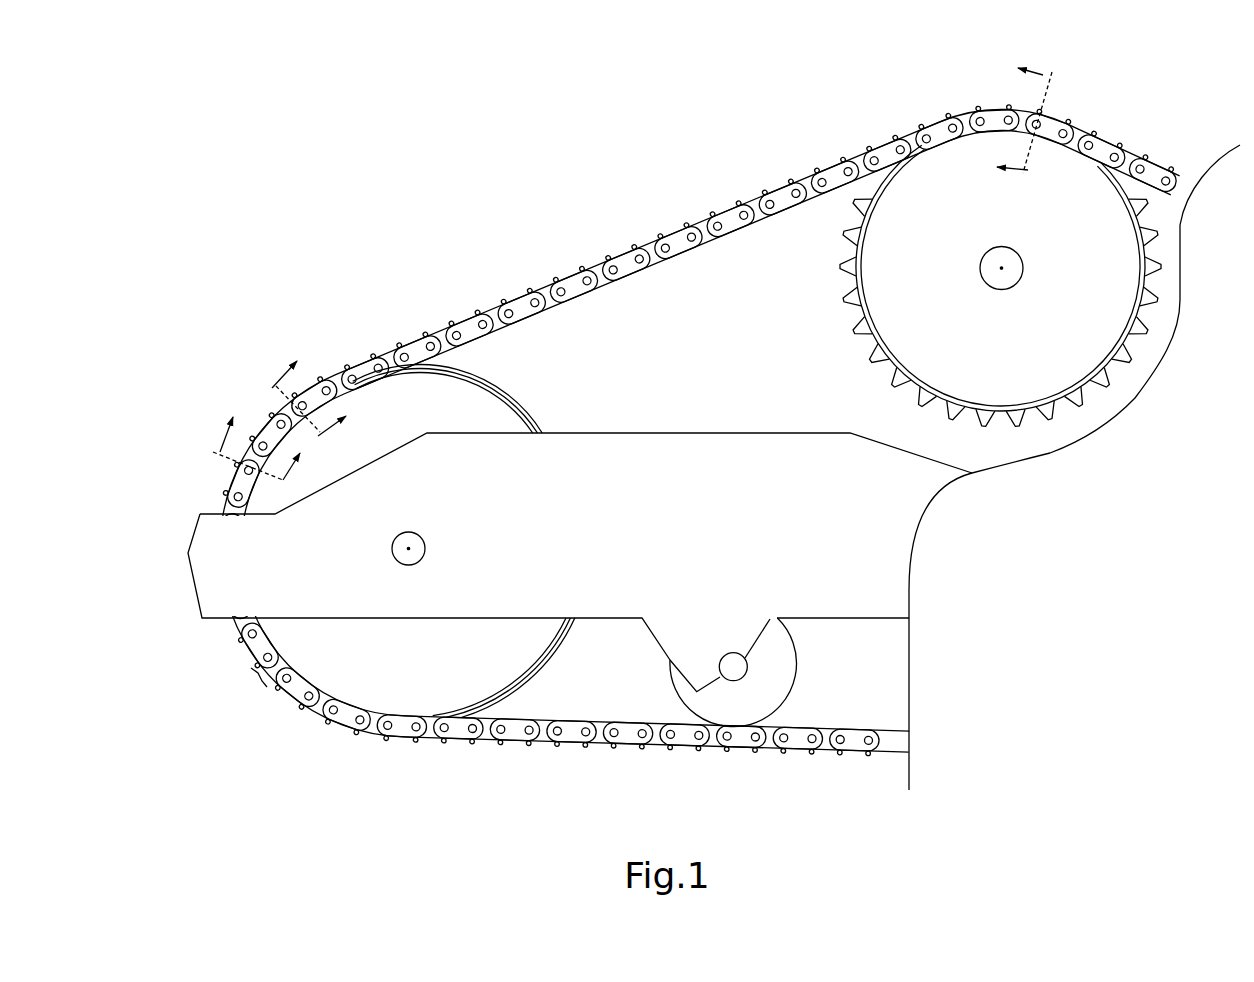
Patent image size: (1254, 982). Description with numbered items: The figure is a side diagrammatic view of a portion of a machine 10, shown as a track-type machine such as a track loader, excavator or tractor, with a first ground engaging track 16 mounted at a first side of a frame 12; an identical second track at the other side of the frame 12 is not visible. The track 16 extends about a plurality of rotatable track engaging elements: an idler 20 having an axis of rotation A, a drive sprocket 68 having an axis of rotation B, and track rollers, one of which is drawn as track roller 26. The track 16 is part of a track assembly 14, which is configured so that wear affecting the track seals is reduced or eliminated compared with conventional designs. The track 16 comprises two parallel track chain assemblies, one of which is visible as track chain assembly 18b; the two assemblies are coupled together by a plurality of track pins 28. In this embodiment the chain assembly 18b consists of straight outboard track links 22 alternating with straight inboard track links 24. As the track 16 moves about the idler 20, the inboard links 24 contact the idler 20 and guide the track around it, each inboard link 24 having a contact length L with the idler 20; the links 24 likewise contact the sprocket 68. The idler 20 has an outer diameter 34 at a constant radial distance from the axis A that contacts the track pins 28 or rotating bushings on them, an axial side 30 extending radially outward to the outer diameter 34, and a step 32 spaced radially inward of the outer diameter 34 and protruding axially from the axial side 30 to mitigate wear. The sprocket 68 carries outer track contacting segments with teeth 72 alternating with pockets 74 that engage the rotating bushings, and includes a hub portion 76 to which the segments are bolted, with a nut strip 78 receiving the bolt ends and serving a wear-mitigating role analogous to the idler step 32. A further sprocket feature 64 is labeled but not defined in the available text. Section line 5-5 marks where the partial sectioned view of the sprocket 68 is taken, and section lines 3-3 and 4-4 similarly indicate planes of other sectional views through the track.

The machine 10 is at (236, 334).
The frame 12 is at (189, 553).
The track assembly 14 is at (236, 650).
The ground engaging track 16 is at (627, 752).
The track chain assembly 18b is at (538, 746).
The idler 20 is at (512, 425).
The outboard track links 22 is at (323, 378).
The inboard track links 24 is at (232, 463).
The track roller 26 is at (792, 669).
The track pins 28 is at (693, 732).
The axial side 30 is at (456, 395).
The step 32 is at (444, 380).
The outer diameter 34 is at (528, 398).
The tooth root 64 is at (910, 401).
The drive sprocket 68 is at (864, 387).
The teeth 72 is at (850, 232).
The pockets 74 is at (823, 287).
The hub portion 76 is at (1023, 398).
The nut strip 78 is at (846, 343).
The axis of rotation A is at (410, 550).
The axis of rotation B is at (1002, 270).
The contact length L is at (250, 681).
The section line 3- 3 is at (302, 410).
The section line 4- 4 is at (250, 457).
The section line 5- 5 is at (1029, 125).